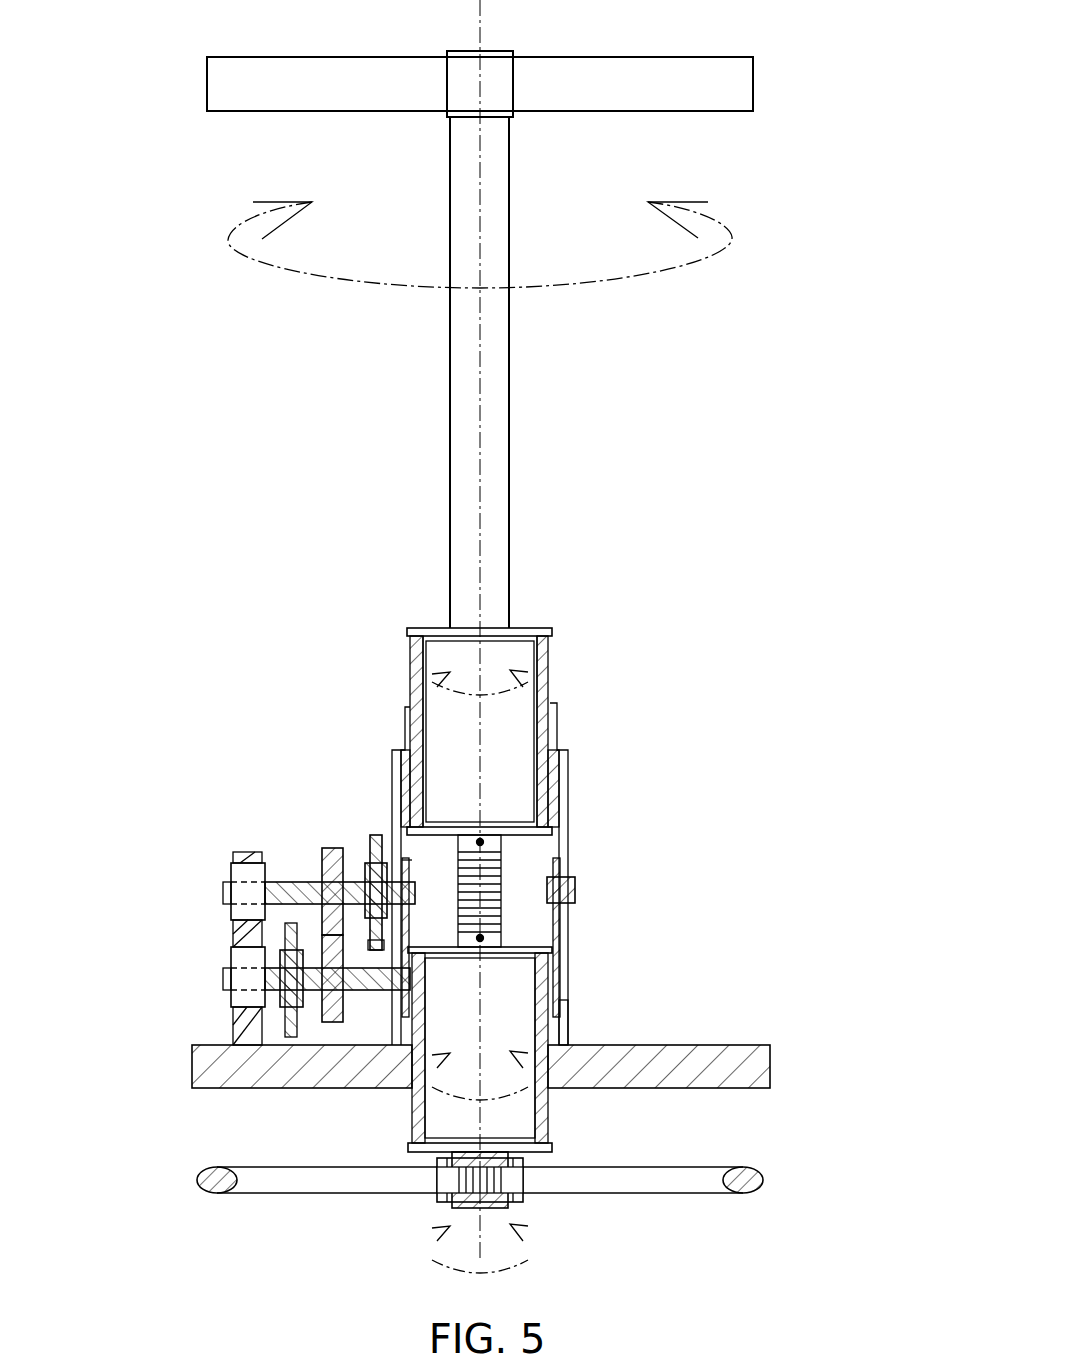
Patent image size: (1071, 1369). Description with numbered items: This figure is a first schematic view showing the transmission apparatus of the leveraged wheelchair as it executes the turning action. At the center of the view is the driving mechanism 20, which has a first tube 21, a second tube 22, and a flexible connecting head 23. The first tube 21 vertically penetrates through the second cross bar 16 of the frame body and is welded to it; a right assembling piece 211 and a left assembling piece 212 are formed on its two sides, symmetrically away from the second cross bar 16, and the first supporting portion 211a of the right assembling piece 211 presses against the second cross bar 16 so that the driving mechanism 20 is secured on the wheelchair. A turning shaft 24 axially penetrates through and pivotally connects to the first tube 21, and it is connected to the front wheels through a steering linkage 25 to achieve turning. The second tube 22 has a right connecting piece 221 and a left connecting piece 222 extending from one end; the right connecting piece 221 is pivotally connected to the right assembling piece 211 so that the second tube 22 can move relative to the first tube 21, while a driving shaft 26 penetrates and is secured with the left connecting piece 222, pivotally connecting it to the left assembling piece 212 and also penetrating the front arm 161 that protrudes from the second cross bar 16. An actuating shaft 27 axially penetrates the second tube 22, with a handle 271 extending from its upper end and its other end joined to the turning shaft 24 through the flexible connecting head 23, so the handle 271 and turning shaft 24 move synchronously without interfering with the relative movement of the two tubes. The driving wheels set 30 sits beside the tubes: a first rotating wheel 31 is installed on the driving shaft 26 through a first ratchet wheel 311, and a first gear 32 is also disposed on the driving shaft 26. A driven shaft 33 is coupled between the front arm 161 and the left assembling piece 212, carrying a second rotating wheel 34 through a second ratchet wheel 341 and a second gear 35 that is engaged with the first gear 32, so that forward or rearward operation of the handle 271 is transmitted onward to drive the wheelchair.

The second cross bar 16 is at (760, 1070).
The front arm 161 is at (243, 1025).
The driving mechanism 20 is at (421, 596).
The first tube 21 is at (540, 1110).
The right assembling piece 211 is at (560, 957).
The first supporting portion 211a is at (562, 1033).
The left assembling piece 212 is at (408, 922).
The second tube 22 is at (543, 688).
The right connecting piece 221 is at (567, 800).
The left connecting piece 222 is at (390, 790).
The flexible connecting head 23 is at (493, 887).
The turning shaft 24 is at (453, 1119).
The steering linkage 25 is at (762, 1182).
The driving shaft 26 is at (225, 893).
The actuating shaft 27 is at (488, 398).
The handle 271 is at (728, 78).
The driving wheels set 30 is at (266, 838).
The first rotating wheel 31 is at (370, 858).
The first ratchet wheel 311 is at (365, 870).
The first gear 32 is at (333, 848).
The driven shaft 33 is at (225, 978).
The second rotating wheel 34 is at (287, 935).
The second ratchet wheel 341 is at (288, 1035).
The second gear 35 is at (328, 1005).